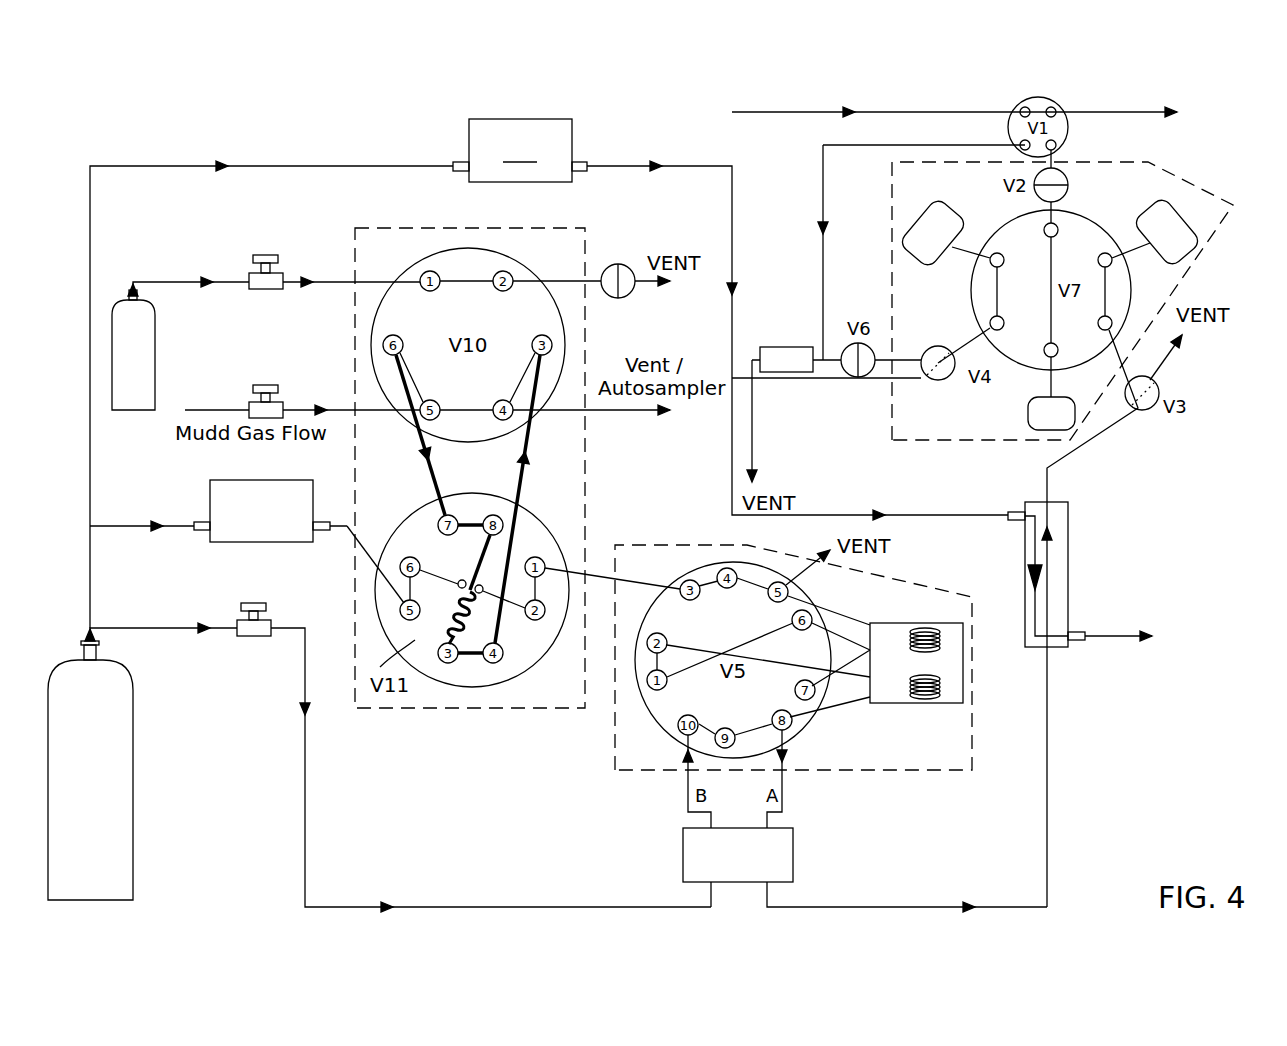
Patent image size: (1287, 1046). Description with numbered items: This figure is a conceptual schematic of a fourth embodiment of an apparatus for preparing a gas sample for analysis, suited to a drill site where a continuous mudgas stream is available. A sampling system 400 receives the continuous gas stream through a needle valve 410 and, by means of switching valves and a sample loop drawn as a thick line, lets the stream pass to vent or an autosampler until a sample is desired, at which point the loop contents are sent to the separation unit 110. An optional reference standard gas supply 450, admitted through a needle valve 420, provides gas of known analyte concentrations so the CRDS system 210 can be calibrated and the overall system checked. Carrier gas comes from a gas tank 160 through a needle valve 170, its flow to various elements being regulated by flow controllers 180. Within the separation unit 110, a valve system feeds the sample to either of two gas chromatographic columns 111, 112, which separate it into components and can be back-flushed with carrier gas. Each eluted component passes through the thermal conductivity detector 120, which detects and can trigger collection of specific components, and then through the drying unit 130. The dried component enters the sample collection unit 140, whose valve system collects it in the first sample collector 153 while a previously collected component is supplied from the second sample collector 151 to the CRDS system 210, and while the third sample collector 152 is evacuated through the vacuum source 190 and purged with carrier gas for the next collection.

The sampling system 400 is at (393, 228).
The reference standard gas supply 450 is at (118, 300).
The needle valve 420 is at (265, 255).
The needle valve 410 is at (265, 385).
The flow controller 180 is at (245, 523).
The needle valve 170 is at (254, 603).
The gas tank 160 is at (71, 729).
The vacuum source 190 is at (786, 347).
The third sample collector 152 is at (918, 220).
The first sample collector 153 is at (1185, 258).
The second sample collector 151 is at (1028, 415).
The sample collection unit 140 is at (947, 440).
The drying unit 130 is at (1063, 568).
The gas chromatographic column 111 is at (928, 630).
The gas chromatographic column 112 is at (930, 692).
The separation unit 110 is at (925, 770).
The thermal conductivity detector 120 is at (795, 850).
The CRDS system 210 is at (1218, 131).